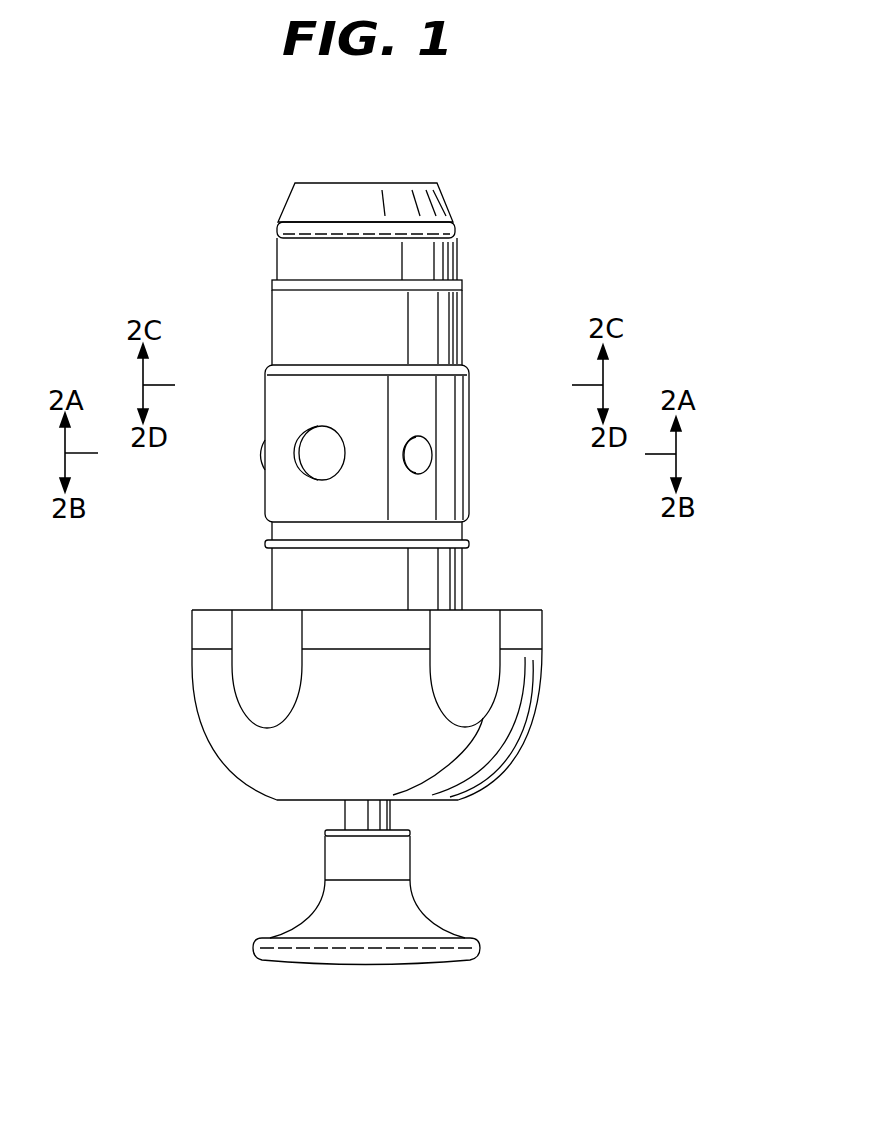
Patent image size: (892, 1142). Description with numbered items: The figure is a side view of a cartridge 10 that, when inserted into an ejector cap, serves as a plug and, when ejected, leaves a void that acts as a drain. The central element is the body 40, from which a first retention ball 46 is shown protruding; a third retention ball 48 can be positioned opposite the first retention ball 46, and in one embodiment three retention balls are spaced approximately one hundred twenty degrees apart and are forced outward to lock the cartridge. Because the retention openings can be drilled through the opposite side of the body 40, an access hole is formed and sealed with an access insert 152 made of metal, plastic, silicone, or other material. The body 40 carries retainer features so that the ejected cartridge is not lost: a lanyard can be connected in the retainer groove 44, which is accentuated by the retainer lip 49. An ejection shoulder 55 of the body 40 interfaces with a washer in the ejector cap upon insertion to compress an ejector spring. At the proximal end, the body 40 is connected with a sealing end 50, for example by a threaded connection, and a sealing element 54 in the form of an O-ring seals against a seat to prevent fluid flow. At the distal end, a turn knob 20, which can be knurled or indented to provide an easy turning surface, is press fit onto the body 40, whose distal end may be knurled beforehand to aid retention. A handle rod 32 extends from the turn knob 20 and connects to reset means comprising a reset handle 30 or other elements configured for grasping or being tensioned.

The cartridge 10 is at (216, 244).
The turn knob 20 is at (223, 745).
The reset handle 30 is at (388, 915).
The handle rod 32 is at (373, 815).
The body 40 is at (428, 577).
The retainer groove 44 is at (458, 532).
The first retention ball 46 is at (265, 447).
The third retention ball 48 is at (417, 455).
The retainer lip 49 is at (265, 545).
The sealing end 50 is at (428, 201).
The sealing element 54 is at (453, 235).
The ejection shoulder 55 is at (460, 367).
The access insert 152 is at (320, 462).